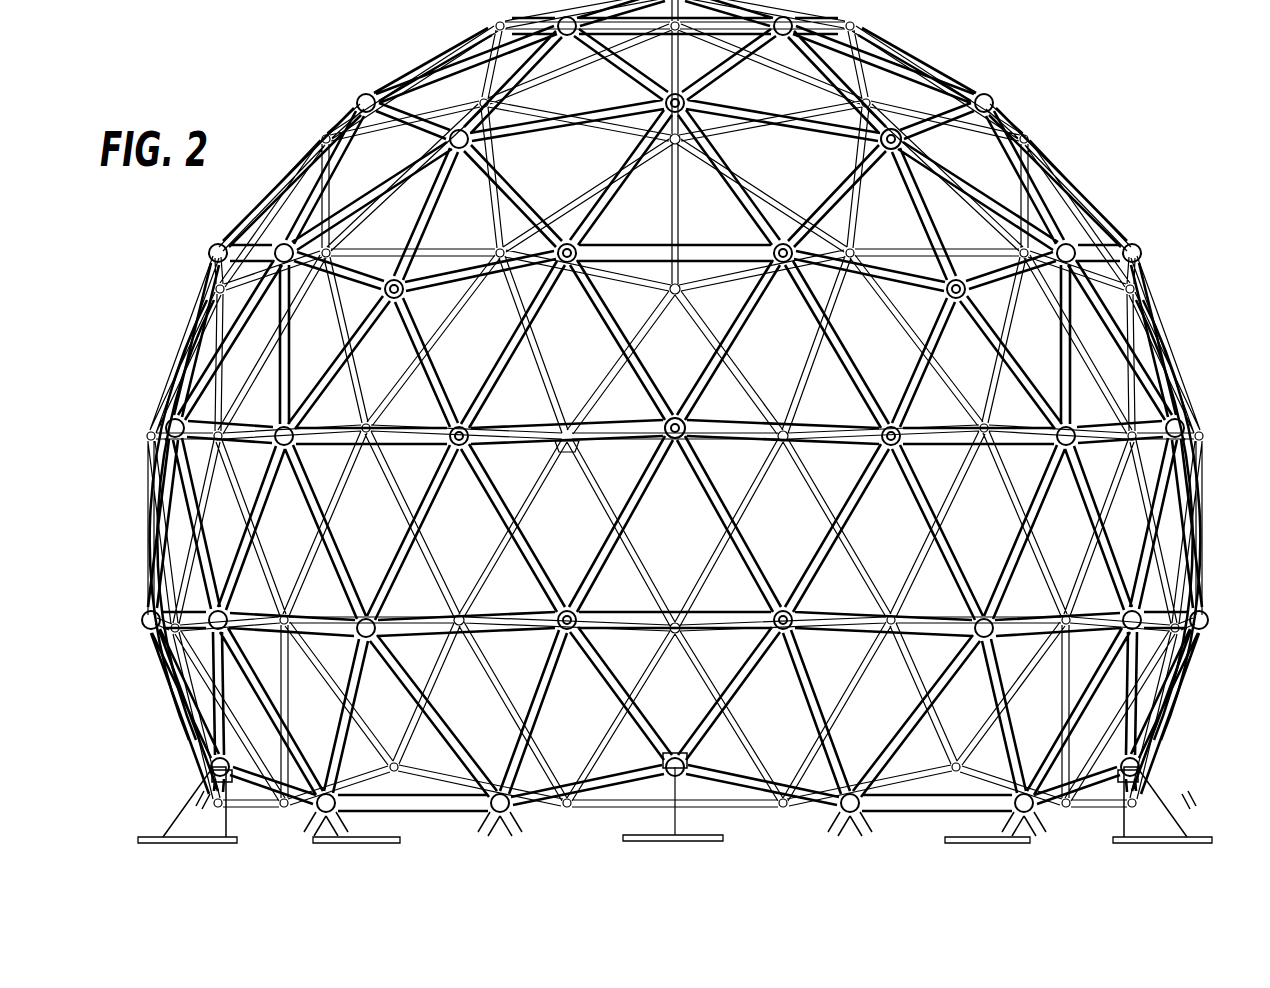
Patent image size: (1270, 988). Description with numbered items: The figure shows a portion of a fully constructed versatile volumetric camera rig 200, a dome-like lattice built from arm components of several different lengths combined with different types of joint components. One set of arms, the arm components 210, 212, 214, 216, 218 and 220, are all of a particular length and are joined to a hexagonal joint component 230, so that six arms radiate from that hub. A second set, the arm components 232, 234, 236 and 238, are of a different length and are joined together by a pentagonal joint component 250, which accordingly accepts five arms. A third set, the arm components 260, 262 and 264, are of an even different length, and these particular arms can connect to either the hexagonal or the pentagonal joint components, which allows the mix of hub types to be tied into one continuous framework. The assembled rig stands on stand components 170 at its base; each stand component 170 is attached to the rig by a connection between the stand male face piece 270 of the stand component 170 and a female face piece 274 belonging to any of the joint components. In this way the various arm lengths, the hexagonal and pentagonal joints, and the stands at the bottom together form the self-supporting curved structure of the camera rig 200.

The rig 200 is at (1092, 88).
The arm component 210 is at (600, 300).
The arm component 212 is at (567, 447).
The arm component 214 is at (648, 478).
The arm component 216 is at (702, 476).
The arm component 218 is at (745, 428).
The arm component 220 is at (735, 336).
The hexagonal joint component 230 is at (681, 402).
The arm component 232 is at (882, 288).
The arm component 234 is at (906, 403).
The arm component 236 is at (1168, 378).
The arm component 238 is at (1140, 288).
The pentagonal joint component 250 is at (1107, 220).
The arm component 260 is at (492, 372).
The arm component 262 is at (484, 480).
The arm component 264 is at (625, 643).
The stand male face piece 270 is at (232, 770).
The stand component 170 is at (196, 822).
The female face piece 274 is at (238, 792).